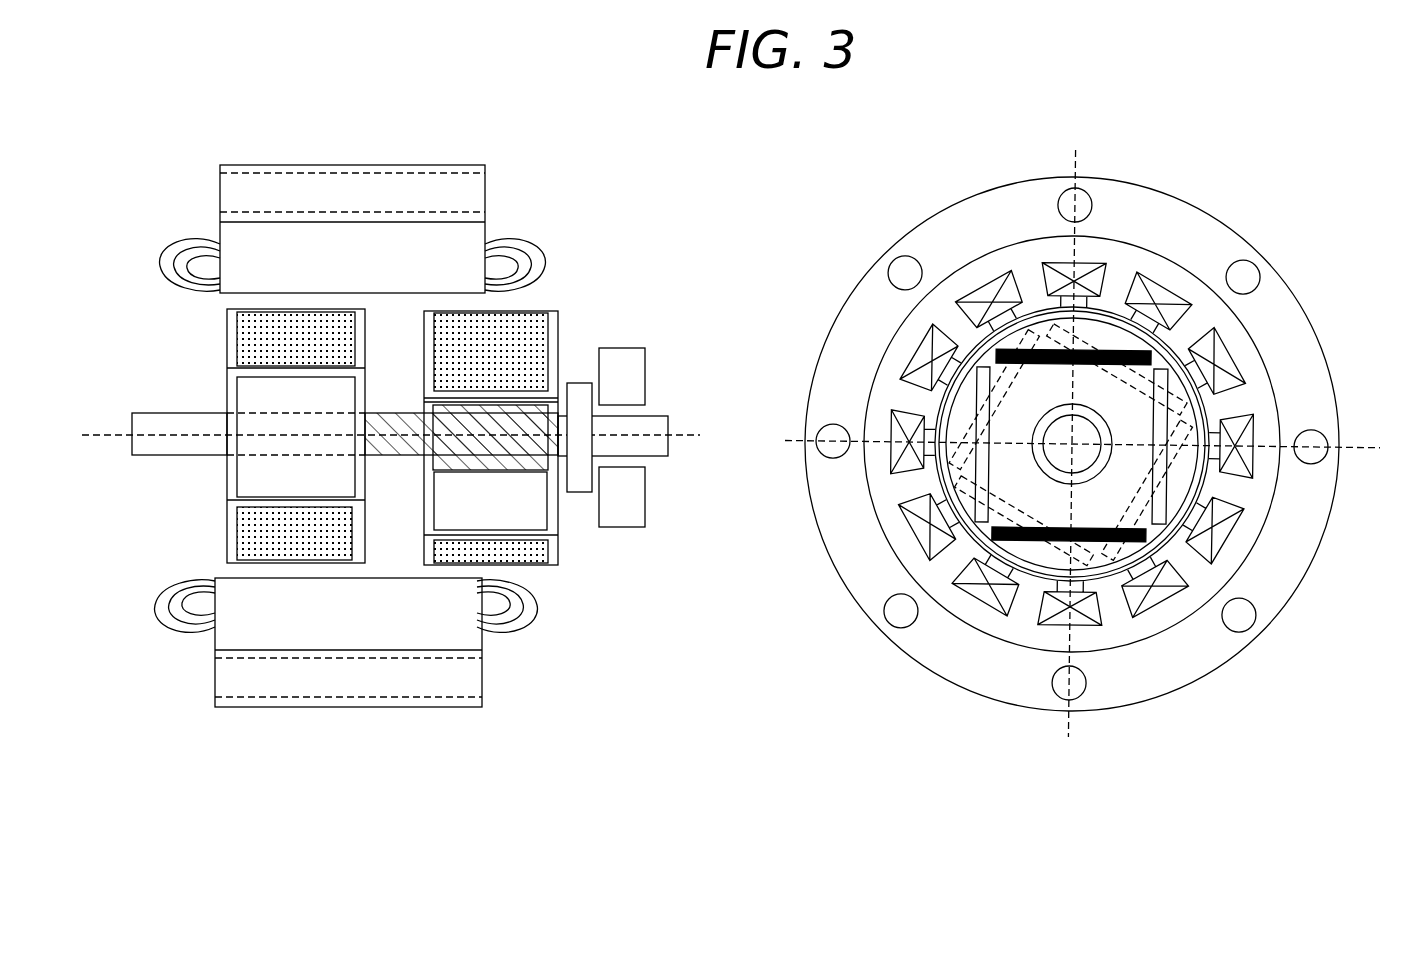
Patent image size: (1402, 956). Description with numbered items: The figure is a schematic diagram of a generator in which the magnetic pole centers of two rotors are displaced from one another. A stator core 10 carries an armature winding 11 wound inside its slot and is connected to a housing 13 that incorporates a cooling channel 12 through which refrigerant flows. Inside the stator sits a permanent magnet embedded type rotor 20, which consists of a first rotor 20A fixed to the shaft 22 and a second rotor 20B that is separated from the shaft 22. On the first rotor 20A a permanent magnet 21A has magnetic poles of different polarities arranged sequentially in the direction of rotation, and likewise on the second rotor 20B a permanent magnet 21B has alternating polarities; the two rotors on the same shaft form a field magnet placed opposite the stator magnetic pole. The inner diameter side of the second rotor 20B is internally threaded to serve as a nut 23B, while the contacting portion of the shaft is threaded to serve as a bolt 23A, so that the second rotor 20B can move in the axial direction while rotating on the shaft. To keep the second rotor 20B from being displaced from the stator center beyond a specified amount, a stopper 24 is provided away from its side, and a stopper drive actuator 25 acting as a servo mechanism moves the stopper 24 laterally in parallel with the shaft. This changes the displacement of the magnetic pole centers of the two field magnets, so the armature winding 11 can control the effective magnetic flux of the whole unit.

The stator core 10 is at (252, 212).
The armature winding 11 is at (170, 237).
The cooling channel 12 is at (305, 175).
The housing 13 is at (453, 168).
The permanent magnet embedded type rotor 20 is at (1162, 358).
The first rotor 20A is at (232, 547).
The second rotor 20B is at (427, 555).
The permanent magnet 21A is at (330, 476).
The permanent magnet 21B is at (527, 512).
The shaft 22 is at (655, 456).
The bolt 23A is at (398, 415).
The nut 23B is at (533, 468).
The stopper 24 is at (580, 383).
The stopper drive actuator 25 is at (628, 366).